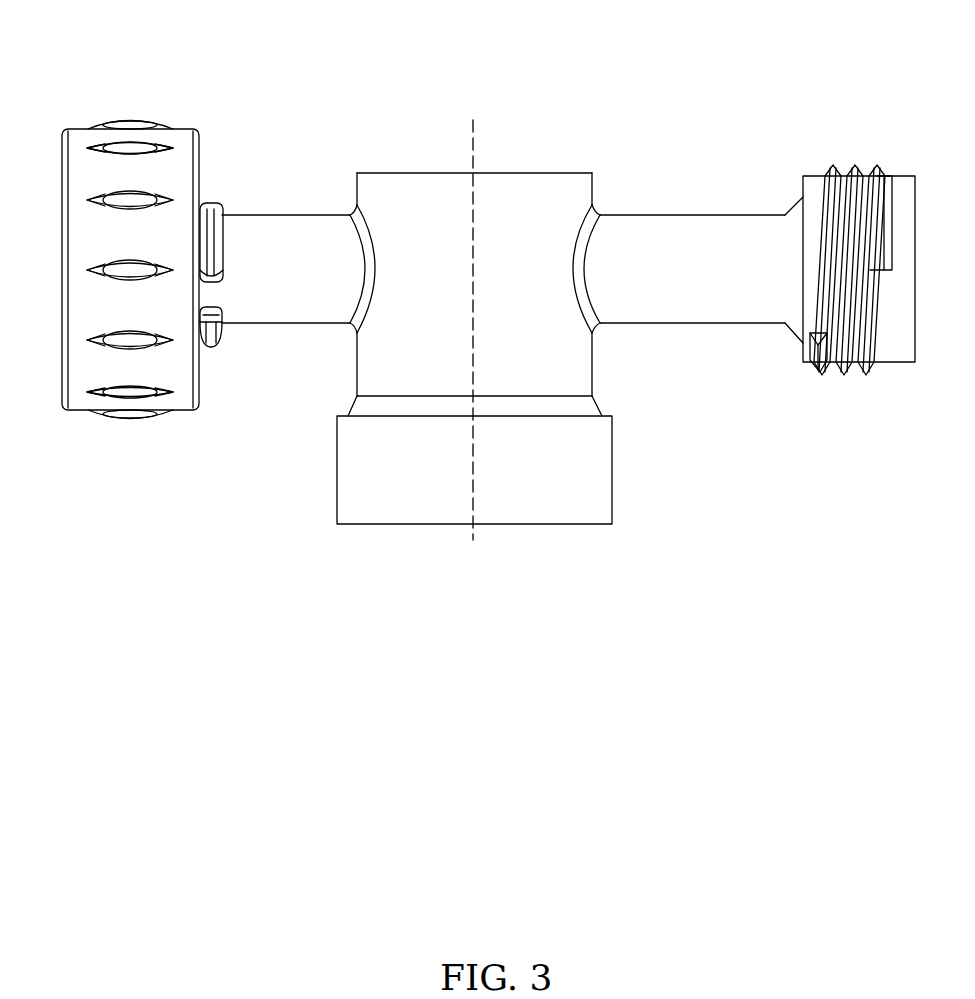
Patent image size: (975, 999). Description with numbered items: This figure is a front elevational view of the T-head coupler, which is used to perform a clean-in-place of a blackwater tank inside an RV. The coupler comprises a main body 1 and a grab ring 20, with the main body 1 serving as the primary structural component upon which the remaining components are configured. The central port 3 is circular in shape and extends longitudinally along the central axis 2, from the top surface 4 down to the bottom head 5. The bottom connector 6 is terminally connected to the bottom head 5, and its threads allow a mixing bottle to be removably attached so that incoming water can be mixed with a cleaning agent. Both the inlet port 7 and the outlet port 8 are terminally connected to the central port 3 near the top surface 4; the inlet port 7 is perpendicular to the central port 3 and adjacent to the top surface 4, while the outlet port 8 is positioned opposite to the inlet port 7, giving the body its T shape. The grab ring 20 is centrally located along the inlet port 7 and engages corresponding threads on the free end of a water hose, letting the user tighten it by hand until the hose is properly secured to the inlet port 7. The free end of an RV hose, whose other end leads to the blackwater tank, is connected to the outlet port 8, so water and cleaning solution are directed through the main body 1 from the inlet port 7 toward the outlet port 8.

The main body 1 is at (734, 490).
The central axis 2 is at (477, 484).
The central port 3 is at (580, 355).
The top surface 4 is at (511, 170).
The bottom head 5 is at (378, 412).
The bottom connector 6 is at (335, 479).
The inlet port 7 is at (273, 212).
The outlet port 8 is at (679, 213).
The grab ring 20 is at (147, 120).